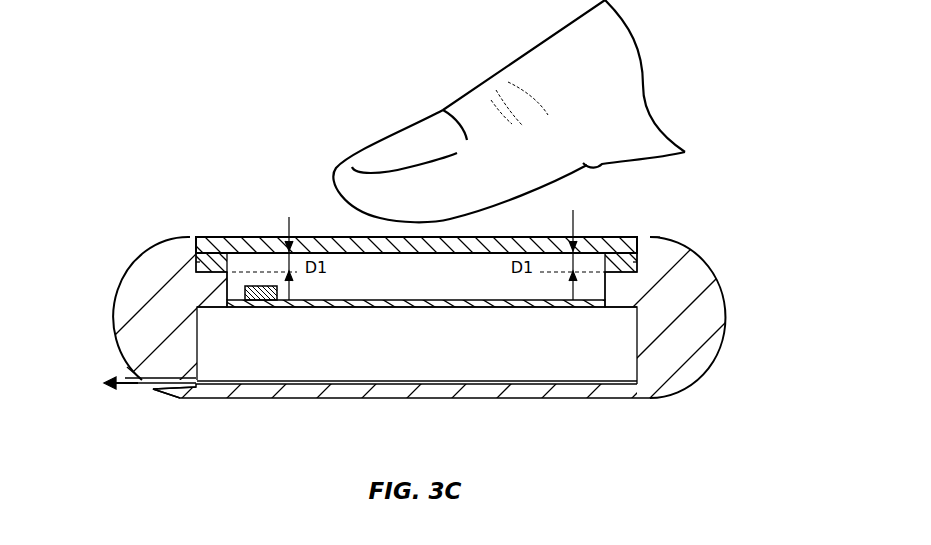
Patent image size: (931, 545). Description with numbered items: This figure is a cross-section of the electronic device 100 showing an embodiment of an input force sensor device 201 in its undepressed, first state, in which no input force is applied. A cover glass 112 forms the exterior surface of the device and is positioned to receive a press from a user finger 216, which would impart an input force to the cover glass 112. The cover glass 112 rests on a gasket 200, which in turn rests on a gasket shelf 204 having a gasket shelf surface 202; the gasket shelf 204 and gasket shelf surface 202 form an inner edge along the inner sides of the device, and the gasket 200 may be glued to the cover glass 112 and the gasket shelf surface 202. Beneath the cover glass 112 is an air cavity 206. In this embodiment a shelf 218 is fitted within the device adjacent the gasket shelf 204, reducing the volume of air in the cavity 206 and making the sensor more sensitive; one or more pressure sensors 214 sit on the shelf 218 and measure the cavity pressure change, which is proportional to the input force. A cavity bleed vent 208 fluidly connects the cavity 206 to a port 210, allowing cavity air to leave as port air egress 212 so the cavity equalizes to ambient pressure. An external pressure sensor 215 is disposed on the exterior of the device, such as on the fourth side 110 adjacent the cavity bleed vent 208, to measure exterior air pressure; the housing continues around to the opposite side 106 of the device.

The electronic device 100 is at (183, 126).
The housing second portion 106 is at (722, 316).
The fourth side 110 is at (112, 321).
The cover glass 112 is at (319, 236).
The gasket 200 is at (196, 260).
The input force sensor device 201 is at (722, 266).
The gasket shelf surface 202 is at (207, 262).
The gasket shelf 204 is at (226, 306).
The cavity 206 is at (466, 390).
The cavity bleed vent 208 is at (170, 398).
The port 210 is at (205, 375).
The port air egress 212 is at (133, 388).
The pressure sensor 214 is at (257, 287).
The external pressure sensor 215 is at (125, 376).
The user finger 216 is at (520, 62).
The shelf 218 is at (396, 309).